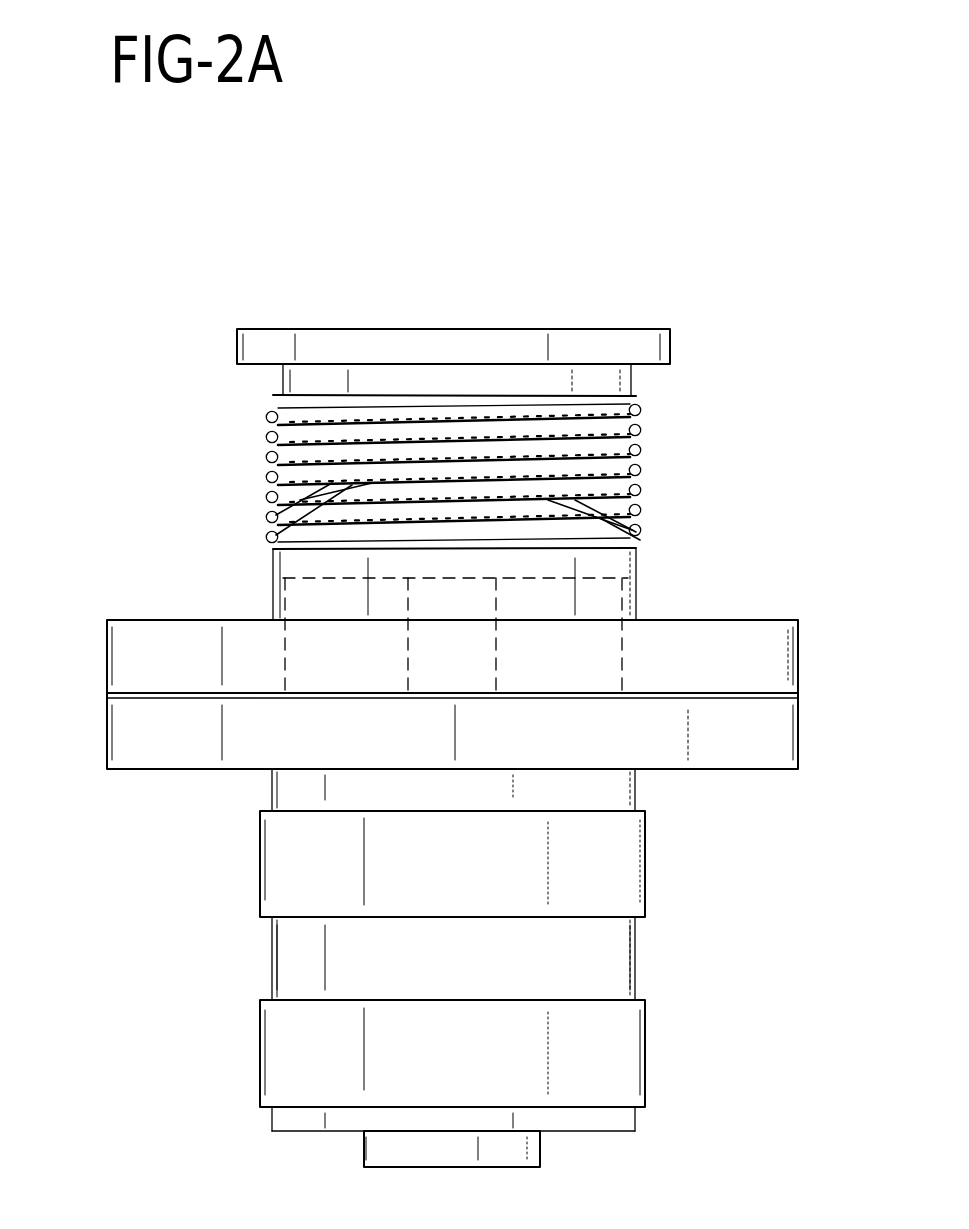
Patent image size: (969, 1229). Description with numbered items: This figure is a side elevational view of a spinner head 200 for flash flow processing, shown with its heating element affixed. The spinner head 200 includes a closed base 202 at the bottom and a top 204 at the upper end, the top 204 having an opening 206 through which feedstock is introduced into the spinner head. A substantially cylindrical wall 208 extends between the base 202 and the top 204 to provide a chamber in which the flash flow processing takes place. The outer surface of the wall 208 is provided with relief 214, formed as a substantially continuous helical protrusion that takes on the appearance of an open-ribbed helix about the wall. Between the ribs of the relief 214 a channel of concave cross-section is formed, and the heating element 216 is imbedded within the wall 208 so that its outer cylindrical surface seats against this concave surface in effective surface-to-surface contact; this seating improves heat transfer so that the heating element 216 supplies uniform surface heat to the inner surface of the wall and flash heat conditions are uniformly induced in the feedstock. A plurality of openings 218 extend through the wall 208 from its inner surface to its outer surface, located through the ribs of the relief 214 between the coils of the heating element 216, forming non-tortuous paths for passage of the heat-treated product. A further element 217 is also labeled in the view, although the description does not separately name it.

The spinner head 200 is at (710, 143).
The closed base 202 is at (162, 632).
The top 204 is at (642, 331).
The opening 206 is at (518, 322).
The substantially cylindrical wall 208 is at (267, 427).
The relief 214 is at (267, 442).
The heating element 216 is at (652, 398).
The coil wire turns (right) 217 is at (641, 426).
The openings 218 is at (267, 499).